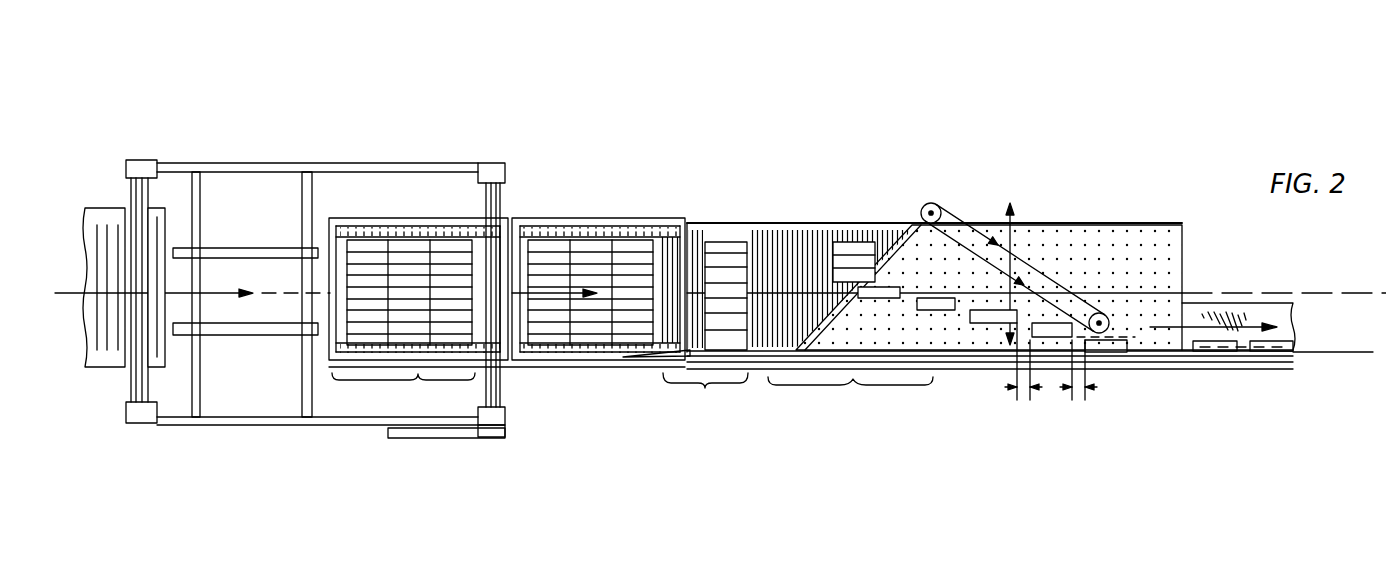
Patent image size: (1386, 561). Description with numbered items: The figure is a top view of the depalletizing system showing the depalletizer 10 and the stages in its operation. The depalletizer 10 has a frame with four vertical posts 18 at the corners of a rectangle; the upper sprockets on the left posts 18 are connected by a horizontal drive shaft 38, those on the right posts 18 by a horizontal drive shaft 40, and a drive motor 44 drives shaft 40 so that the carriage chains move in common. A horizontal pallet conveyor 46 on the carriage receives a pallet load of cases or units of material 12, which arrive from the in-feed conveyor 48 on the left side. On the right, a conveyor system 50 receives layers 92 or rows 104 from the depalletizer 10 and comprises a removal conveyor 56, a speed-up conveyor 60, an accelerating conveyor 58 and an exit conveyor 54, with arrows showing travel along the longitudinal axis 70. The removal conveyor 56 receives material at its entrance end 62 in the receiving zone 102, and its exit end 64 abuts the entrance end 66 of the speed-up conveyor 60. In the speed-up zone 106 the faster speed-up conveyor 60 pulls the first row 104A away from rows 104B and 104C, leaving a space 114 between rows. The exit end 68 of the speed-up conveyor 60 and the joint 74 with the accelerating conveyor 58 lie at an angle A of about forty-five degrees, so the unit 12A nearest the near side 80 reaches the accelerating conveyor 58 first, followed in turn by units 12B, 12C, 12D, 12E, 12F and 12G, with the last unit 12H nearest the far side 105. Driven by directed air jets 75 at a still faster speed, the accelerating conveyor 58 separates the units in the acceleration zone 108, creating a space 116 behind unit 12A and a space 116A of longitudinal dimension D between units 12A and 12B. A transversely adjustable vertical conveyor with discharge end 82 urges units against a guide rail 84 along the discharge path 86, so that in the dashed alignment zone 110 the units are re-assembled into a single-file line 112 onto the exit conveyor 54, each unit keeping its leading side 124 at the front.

The depalletizer 10 is at (616, 114).
The units of material 12 is at (407, 243).
The first unit 12A is at (596, 360).
The second unit 12B is at (712, 338).
The unit of material 12C is at (712, 318).
The unit of material 12D is at (772, 252).
The unit of material 12E is at (724, 293).
The unit of material 12F is at (730, 283).
The unit of material 12G is at (737, 272).
The last unit 12H is at (745, 262).
The vertical posts 18 is at (137, 160).
The horizontal drive shaft 38 is at (150, 190).
The horizontal drive shaft 40 is at (485, 200).
The drive motor 44 is at (492, 428).
The pallet conveyor 46 is at (250, 248).
The in-feed conveyor 48 is at (100, 208).
The conveyor system 50 is at (669, 203).
The exit conveyor 54 is at (1273, 303).
The removal conveyor 56 is at (540, 240).
The accelerating conveyor 58 is at (1130, 224).
The speed-up conveyor 60 is at (822, 250).
The entrance end 62 is at (320, 240).
The exit end 64 is at (690, 232).
The entrance end 66 is at (705, 243).
The exit end 68 is at (778, 370).
The longitudinal axis 70 is at (1215, 292).
The joint 74 is at (931, 203).
The directed jets 75 is at (968, 232).
The near side 80 is at (935, 375).
The discharge end 82 is at (1108, 314).
The guide rail 84 is at (1155, 365).
The discharge path 86 is at (1315, 352).
The layer 92 is at (363, 240).
The receiving zone 102 is at (418, 378).
The rows 104 is at (722, 242).
The first row 104A is at (632, 358).
The second row 104B is at (580, 240).
The third row 104C is at (478, 345).
The far side 105 is at (808, 227).
The speed-up zone 106 is at (708, 384).
The acceleration zone 108 is at (853, 386).
The alignment zone 110 is at (1055, 345).
The line 112 is at (1222, 355).
The space 114 is at (868, 242).
The space 116 is at (979, 350).
The space 116A is at (1090, 372).
The leading side 124 is at (885, 287).
The angle A is at (826, 330).
The longitudinal dimension D is at (1069, 394).